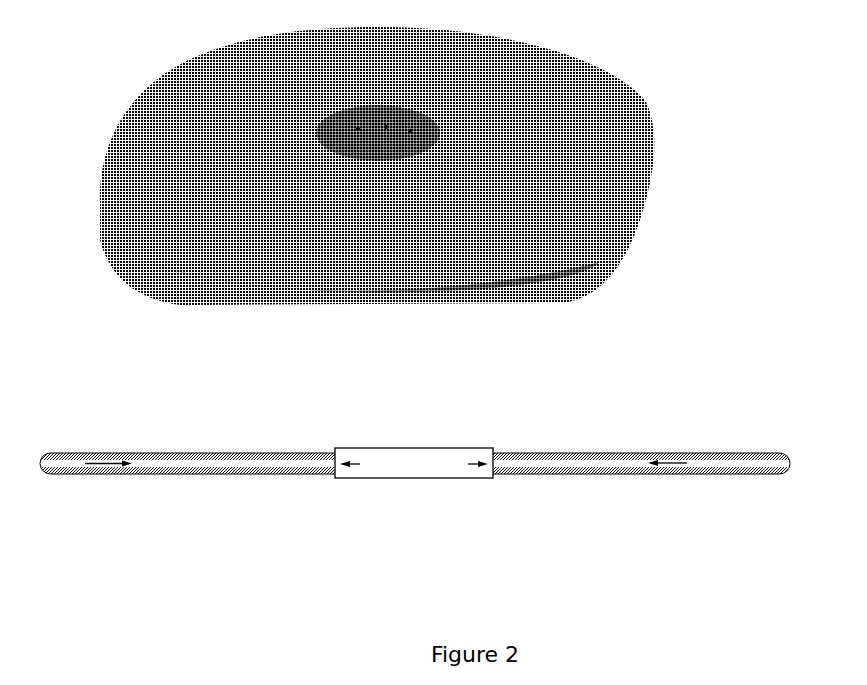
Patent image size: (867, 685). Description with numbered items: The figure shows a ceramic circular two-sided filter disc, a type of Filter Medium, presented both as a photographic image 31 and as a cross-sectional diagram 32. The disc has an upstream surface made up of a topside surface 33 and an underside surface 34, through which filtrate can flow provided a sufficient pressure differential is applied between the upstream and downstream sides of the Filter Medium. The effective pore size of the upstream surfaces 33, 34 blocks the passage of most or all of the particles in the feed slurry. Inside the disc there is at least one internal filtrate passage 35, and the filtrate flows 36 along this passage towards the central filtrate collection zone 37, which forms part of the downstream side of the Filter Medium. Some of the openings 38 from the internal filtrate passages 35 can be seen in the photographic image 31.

The photographic image 31 is at (158, 221).
The diagram 32 is at (411, 454).
The topside surface 33 is at (172, 454).
The underside surface 34 is at (190, 474).
The internal filtrate passage 35 is at (263, 471).
The filtrate flow 36 is at (467, 448).
The central filtrate collection zone 37 is at (385, 478).
The openings 38 is at (364, 137).